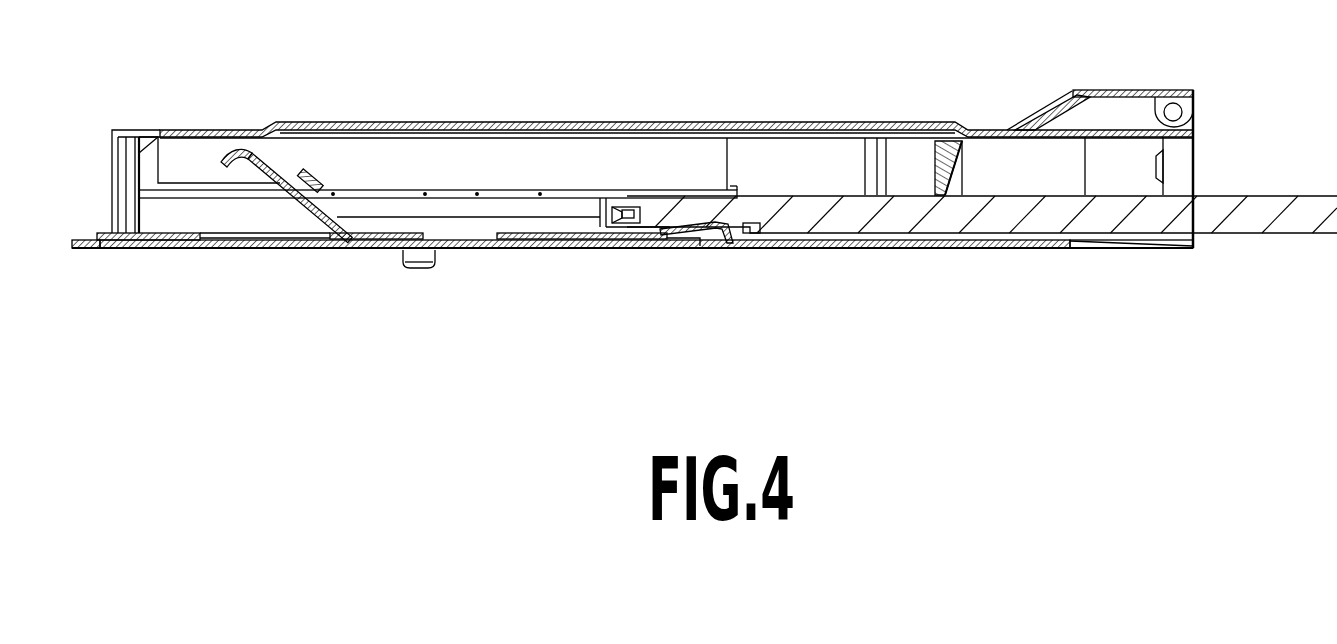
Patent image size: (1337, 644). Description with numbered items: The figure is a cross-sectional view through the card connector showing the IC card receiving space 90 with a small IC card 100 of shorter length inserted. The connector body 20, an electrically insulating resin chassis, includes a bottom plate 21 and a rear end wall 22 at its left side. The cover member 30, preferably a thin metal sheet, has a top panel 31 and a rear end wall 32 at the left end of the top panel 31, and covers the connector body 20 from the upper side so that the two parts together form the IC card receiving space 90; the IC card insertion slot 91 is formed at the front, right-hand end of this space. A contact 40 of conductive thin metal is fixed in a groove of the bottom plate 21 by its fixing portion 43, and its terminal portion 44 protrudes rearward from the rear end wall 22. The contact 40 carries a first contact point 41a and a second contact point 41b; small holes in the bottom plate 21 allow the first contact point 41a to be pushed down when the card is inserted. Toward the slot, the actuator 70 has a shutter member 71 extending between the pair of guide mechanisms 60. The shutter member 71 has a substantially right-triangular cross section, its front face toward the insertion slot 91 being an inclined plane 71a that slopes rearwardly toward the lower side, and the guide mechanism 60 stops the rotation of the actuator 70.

The connector body 20 is at (860, 268).
The bottom plate 21 is at (793, 250).
The rear end wall 22 is at (140, 208).
The cover member 30 is at (556, 118).
The top panel 31 is at (670, 123).
The rear end wall 32 is at (112, 172).
The contact 40 is at (345, 206).
The first contact point 41a is at (705, 242).
The second contact point 41b is at (233, 153).
The fixing portion 43 is at (517, 250).
The terminal portion 44 is at (83, 248).
The guide mechanism 60 is at (1110, 168).
The actuator 70 is at (921, 157).
The shutter member 71 is at (937, 196).
The inclined plane 71a is at (963, 167).
The IC card receiving space 90 is at (453, 170).
The IC card insertion slot 91 is at (1196, 161).
The small IC card 100 is at (1295, 215).